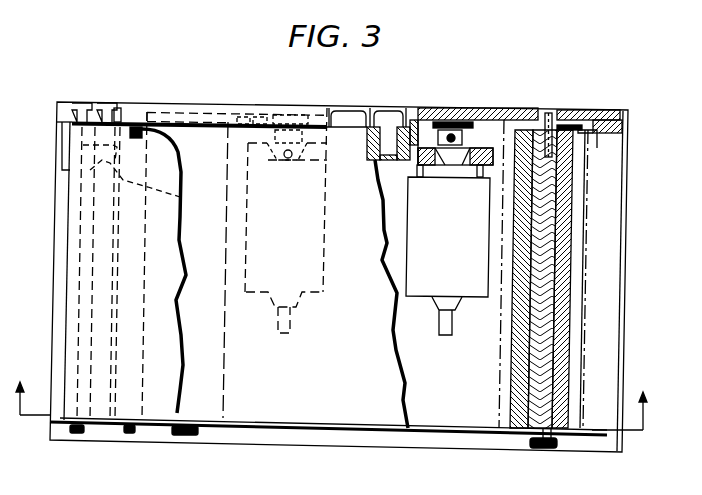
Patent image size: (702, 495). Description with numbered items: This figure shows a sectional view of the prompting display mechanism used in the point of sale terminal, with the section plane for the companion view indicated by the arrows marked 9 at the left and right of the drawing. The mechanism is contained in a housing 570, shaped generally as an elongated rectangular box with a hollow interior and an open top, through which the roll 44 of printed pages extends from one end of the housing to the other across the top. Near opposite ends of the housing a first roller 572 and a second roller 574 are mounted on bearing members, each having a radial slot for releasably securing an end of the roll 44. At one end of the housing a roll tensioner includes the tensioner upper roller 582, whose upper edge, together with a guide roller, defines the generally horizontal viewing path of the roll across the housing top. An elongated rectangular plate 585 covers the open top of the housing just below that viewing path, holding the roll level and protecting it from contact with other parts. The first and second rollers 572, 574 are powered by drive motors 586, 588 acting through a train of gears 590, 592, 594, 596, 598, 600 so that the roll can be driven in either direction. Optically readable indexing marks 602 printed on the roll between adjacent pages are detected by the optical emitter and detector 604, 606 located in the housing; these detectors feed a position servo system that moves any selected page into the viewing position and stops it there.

The section line 9- 9 is at (332, 393).
The roll 44 is at (157, 403).
The housing 570 is at (620, 326).
The first roller 572 is at (232, 328).
The second roller 574 is at (560, 187).
The tensioner upper roller 582 is at (72, 310).
The plate 585 is at (409, 397).
The drive motor 586 is at (325, 268).
The drive motor 588 is at (478, 287).
The gear 590 is at (288, 116).
The gear 592 is at (235, 115).
The gear 594 is at (166, 117).
The gear 596 is at (443, 112).
The bolt 598 is at (504, 112).
The gear 600 is at (568, 120).
The indexing marks 602 is at (181, 160).
The optical emitter 604 is at (153, 178).
The optical emitter 606 is at (62, 147).